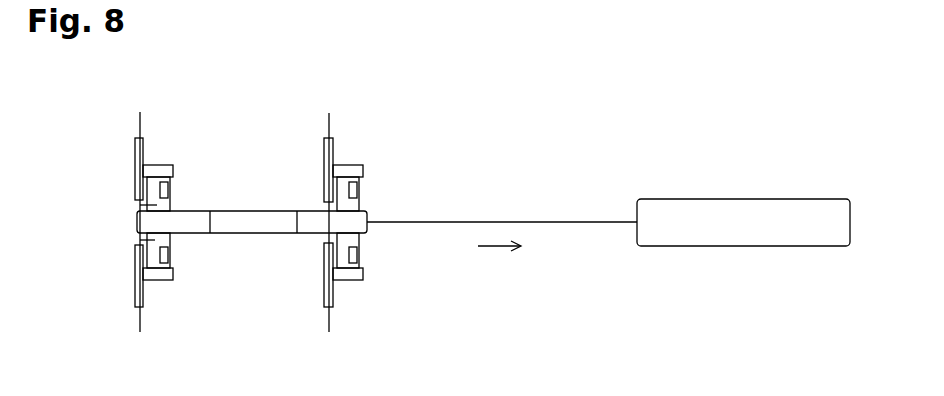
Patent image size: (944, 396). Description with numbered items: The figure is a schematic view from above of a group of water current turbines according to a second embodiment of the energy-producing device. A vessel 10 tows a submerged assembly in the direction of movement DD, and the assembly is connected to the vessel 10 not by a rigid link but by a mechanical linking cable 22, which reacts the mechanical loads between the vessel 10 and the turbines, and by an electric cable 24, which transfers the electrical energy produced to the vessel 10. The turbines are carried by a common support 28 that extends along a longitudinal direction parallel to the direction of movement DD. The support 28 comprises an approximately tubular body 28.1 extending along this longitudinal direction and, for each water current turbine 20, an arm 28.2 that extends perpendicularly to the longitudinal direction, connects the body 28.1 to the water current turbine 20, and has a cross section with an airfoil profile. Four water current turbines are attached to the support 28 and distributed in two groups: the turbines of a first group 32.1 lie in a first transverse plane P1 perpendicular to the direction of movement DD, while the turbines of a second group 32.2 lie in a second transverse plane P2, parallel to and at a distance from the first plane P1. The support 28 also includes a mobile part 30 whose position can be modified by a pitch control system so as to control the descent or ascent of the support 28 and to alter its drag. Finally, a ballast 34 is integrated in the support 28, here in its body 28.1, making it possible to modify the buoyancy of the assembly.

The vessel 10 is at (762, 198).
The water current turbine 20 is at (134, 151).
The mechanical linking cable 22 is at (502, 165).
The electric cable 24 is at (491, 219).
The support 28 is at (252, 238).
The tubular body 28.1 is at (312, 222).
The arm 28.2 is at (155, 240).
The mobile part 30 is at (171, 181).
The first group 32.1 is at (164, 281).
The second group 32.2 is at (354, 281).
The ballast 34 is at (254, 226).
The first transverse plane P1 is at (140, 314).
The second transverse plane P2 is at (329, 314).
The direction of movement DD is at (500, 247).